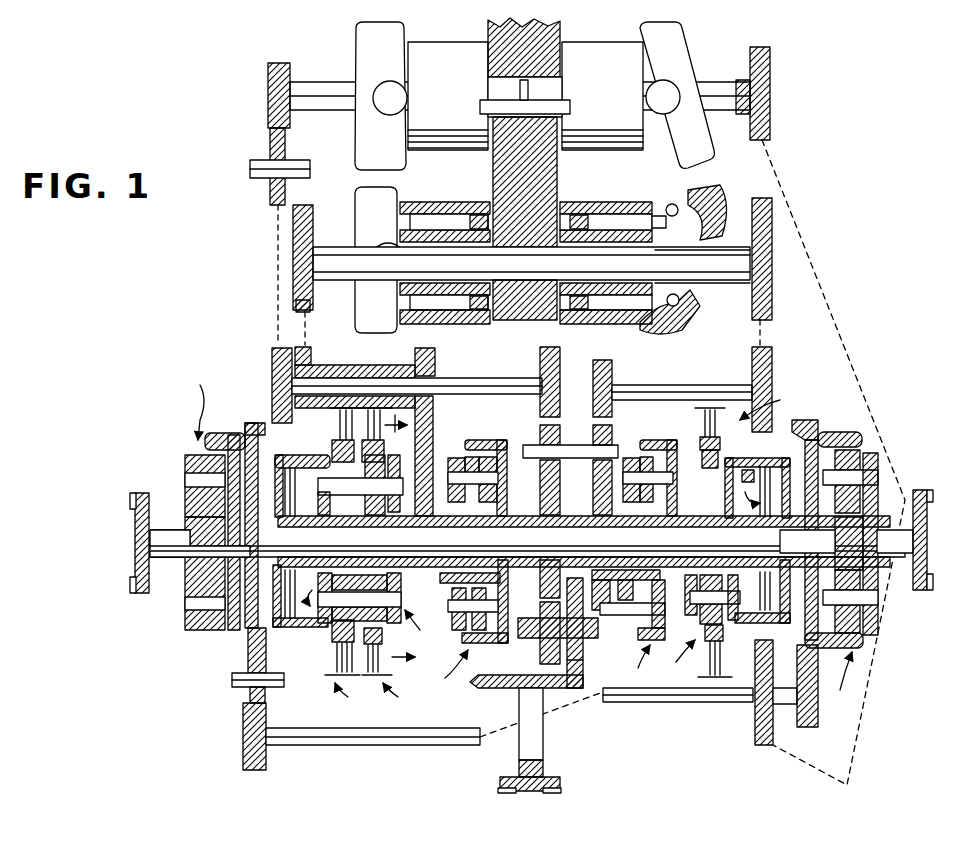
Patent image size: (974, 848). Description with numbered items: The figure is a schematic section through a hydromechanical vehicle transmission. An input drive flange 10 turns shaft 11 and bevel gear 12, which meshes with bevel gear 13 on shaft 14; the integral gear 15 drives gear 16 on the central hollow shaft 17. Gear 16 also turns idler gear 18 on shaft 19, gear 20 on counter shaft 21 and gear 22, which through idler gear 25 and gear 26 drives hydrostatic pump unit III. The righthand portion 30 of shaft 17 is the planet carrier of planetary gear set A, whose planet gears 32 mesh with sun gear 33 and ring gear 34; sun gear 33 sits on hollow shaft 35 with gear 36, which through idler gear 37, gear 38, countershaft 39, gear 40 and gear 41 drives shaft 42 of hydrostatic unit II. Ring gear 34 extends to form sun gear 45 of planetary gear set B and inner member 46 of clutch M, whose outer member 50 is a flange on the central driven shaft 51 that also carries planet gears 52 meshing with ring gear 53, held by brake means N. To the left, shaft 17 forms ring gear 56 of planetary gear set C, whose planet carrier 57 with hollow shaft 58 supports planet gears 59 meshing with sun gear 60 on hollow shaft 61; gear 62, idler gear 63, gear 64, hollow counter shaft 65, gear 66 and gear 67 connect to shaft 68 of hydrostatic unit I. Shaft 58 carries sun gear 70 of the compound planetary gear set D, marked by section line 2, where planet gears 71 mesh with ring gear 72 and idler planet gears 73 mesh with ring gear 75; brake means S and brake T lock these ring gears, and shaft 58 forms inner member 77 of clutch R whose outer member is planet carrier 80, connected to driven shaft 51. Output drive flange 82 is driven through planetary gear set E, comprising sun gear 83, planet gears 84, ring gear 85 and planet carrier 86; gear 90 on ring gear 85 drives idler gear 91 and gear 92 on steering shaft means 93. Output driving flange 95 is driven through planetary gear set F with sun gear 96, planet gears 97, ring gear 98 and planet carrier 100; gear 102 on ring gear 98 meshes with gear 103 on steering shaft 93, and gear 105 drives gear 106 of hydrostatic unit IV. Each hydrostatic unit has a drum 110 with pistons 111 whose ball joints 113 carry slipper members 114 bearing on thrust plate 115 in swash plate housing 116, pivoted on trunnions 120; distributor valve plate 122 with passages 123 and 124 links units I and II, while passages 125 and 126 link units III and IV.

The adjustment direction arrow 2 is at (396, 418).
The input drive flange 10 is at (560, 780).
The shaft 11 is at (543, 735).
The bevel gear 12 is at (486, 688).
The bevel gear 13 is at (583, 665).
The shaft 14 is at (583, 640).
The gear 15 is at (540, 648).
The gear 16 is at (555, 505).
The central hollow shaft 17 is at (562, 516).
The idler gear 18 is at (540, 425).
The shaft 19 is at (582, 448).
The gear 20 is at (560, 365).
The counter shaft 21 is at (447, 380).
The gear 22 is at (272, 362).
The idler gear 25 is at (270, 195).
The gear 26 is at (268, 115).
The planet carrier 30 is at (684, 516).
The planet gears 32 is at (630, 458).
The sun gear 33 is at (645, 516).
The ring gear 34 is at (646, 457).
The hollow shaft 35 is at (622, 516).
The gear 36 is at (593, 488).
The idler gear 37 is at (593, 418).
The gear 38 is at (612, 372).
The countershaft 39 is at (700, 388).
The gear 40 is at (772, 365).
The gear 41 is at (772, 300).
The shaft 42 is at (700, 280).
The sun gear 45 is at (722, 516).
The inner member 46 is at (758, 570).
The outer member 50 is at (770, 460).
The central driven shaft 51 is at (520, 558).
The planet gears 52 is at (662, 460).
The ring gear 53 is at (700, 440).
The ring gear 56 is at (475, 440).
The planet carrier 57 is at (505, 498).
The hollow shaft 58 is at (397, 516).
The planet gears 59 is at (468, 457).
The sun gear 60 is at (505, 516).
The hollow shaft 61 is at (472, 516).
The gear 62 is at (445, 516).
The idler gear 63 is at (435, 425).
The gear 64 is at (435, 356).
The hollow counter shaft 65 is at (350, 368).
The gear 66 is at (312, 358).
The gear 67 is at (310, 292).
The shaft 68 is at (315, 248).
The sun gear 70 is at (345, 516).
The planet gears 71 is at (365, 496).
The ring gear 72 is at (333, 447).
The idler planet gears 73 is at (400, 592).
The ring gear 75 is at (332, 640).
The inner member 77 is at (298, 516).
The planet carrier 80 is at (322, 455).
The output drive flange 82 is at (140, 593).
The sun gear 83 is at (192, 565).
The planet gears 84 is at (185, 464).
The ring gear 85 is at (210, 433).
The planet carrier 86 is at (185, 492).
The gear 90 is at (250, 423).
The idler gear 91 is at (248, 666).
The gear 92 is at (243, 718).
The steering shaft means 93 is at (395, 745).
The output driving flange 95 is at (920, 585).
The sun gear 96 is at (850, 520).
The planet gears 97 is at (862, 462).
The ring gear 98 is at (838, 432).
The planet carrier 100 is at (878, 520).
The gear 102 is at (812, 425).
The gear 103 is at (807, 730).
The gear 105 is at (755, 730).
The gear 106 is at (770, 50).
The drum 110 is at (580, 212).
The pistons 111 is at (620, 215).
The ball joint 113 is at (665, 212).
The slipper member 114 is at (697, 198).
The thrust plate 115 is at (705, 225).
The swash plate housing 116 is at (680, 300).
The trunnions 120 is at (383, 104).
The distributor valve plate 122 is at (513, 168).
The passage 123 is at (520, 205).
The passage 124 is at (520, 315).
The passage 125 is at (510, 38).
The passage 126 is at (520, 112).
The planetary gear set A is at (628, 627).
The planetary gear set B is at (702, 627).
The planetary gear set C is at (471, 628).
The planetary gear set D is at (420, 627).
The planetary gear set E is at (195, 406).
The planetary gear set F is at (842, 680).
The clutch M is at (748, 489).
The brake means N is at (767, 401).
The friction clutch R is at (300, 596).
The first brake means S is at (397, 697).
The second brake T is at (348, 697).
The hydrostatic unit I is at (470, 318).
The hydrostatic unit II is at (595, 310).
The hydrostatic pump unit III is at (425, 158).
The hydrostatic unit IV is at (592, 155).